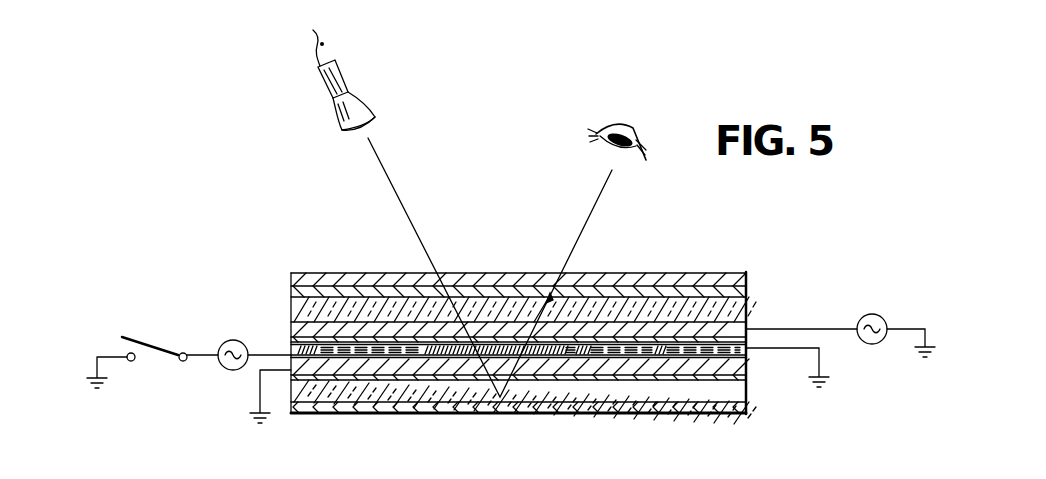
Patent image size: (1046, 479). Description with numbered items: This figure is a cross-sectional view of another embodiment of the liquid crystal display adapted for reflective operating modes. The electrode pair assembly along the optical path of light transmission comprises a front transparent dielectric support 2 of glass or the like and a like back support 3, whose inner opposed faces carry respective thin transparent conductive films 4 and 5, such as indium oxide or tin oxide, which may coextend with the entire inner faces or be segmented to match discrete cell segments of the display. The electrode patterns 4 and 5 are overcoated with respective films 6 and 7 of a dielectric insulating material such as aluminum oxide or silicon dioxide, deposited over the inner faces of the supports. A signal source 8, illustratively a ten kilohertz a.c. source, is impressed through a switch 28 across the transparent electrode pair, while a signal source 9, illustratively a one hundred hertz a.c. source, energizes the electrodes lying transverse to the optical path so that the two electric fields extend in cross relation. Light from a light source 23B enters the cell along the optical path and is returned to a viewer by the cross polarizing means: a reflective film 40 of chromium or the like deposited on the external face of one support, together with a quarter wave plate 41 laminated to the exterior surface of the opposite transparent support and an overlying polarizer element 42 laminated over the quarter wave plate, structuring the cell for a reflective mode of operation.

The front transparent dielectric support 2 is at (746, 394).
The back support 3 is at (746, 311).
The transparent conductive film 4 is at (746, 366).
The transparent conductive film 5 is at (746, 323).
The dielectric insulating film 6 is at (746, 355).
The dielectric insulating film 7 is at (291, 348).
The signal source 8 is at (868, 314).
The signal source 9 is at (233, 340).
The light source 23B is at (338, 82).
The switch 28 is at (140, 338).
The reflective film 40 is at (628, 415).
The quarter wave plate 41 is at (746, 283).
The polarizer element 42 is at (344, 280).